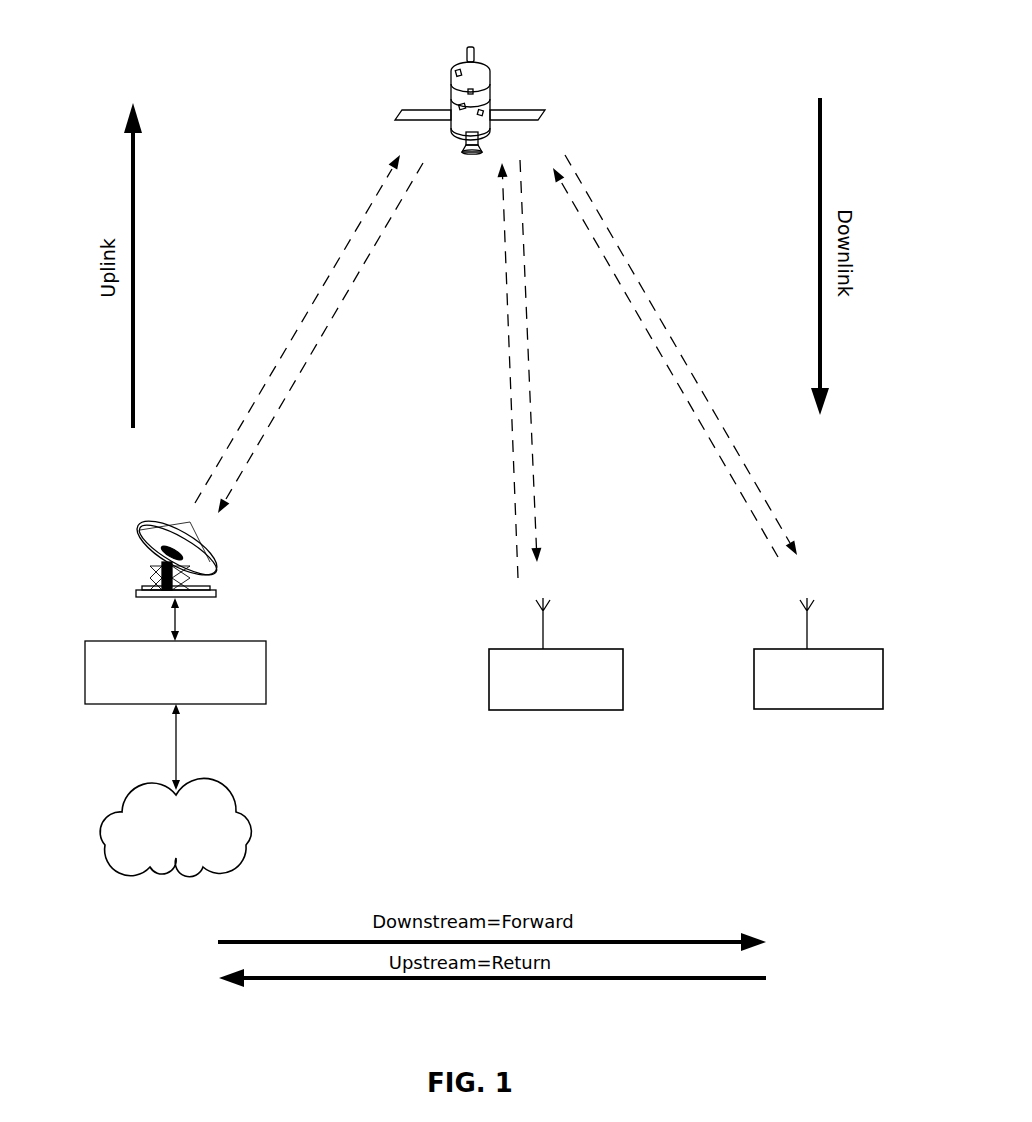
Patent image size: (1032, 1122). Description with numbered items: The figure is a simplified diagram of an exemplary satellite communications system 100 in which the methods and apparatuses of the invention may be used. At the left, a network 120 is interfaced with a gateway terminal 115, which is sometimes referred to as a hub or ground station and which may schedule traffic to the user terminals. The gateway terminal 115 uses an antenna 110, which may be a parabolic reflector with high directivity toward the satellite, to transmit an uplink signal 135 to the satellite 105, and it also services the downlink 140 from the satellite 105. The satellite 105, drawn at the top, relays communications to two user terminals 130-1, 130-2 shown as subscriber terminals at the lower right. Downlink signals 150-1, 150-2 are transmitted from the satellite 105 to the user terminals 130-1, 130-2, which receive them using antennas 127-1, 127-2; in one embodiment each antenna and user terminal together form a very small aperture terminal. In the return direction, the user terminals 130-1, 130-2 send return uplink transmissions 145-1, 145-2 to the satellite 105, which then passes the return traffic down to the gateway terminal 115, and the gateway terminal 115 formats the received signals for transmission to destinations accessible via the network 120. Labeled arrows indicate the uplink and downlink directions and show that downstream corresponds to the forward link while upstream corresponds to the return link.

The satellite communications system 100 is at (636, 107).
The satellite 105 is at (475, 47).
The antenna 110 is at (215, 570).
The gateway terminal 115 is at (266, 672).
The network 120 is at (247, 826).
The antenna 127-1 is at (490, 598).
The antenna 127-2 is at (755, 603).
The user terminal 130-1 is at (489, 676).
The user terminal 130-2 is at (754, 676).
The uplink signal 135 is at (298, 328).
The downlink 140 is at (360, 270).
The return uplink transmission 145-1 is at (510, 372).
The return uplink transmission 145-2 is at (665, 362).
The downlink signal 150-1 is at (533, 465).
The downlink signal 150-2 is at (625, 262).